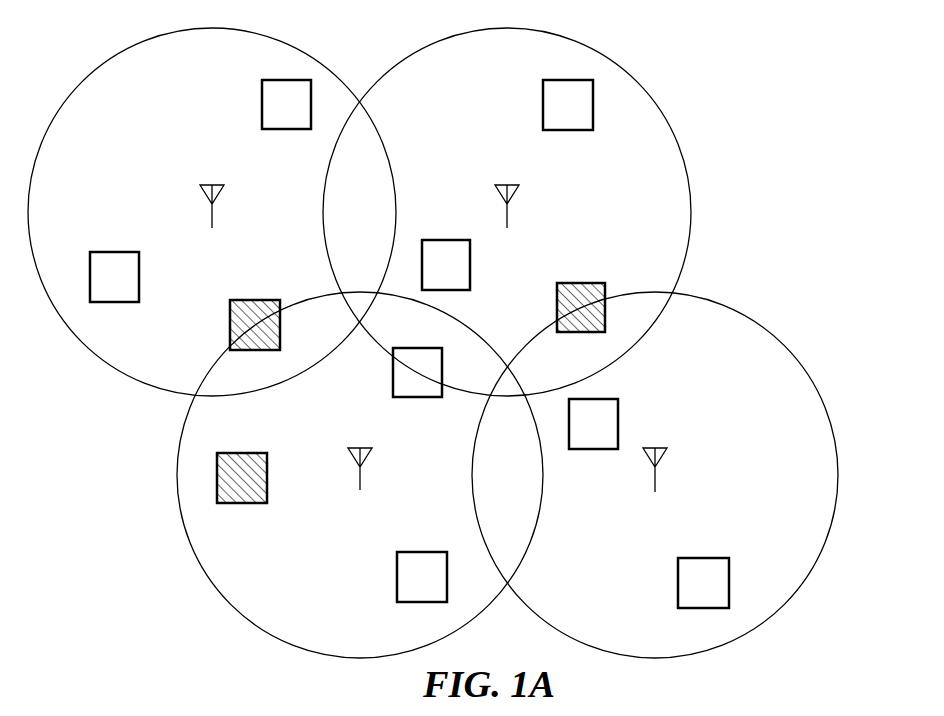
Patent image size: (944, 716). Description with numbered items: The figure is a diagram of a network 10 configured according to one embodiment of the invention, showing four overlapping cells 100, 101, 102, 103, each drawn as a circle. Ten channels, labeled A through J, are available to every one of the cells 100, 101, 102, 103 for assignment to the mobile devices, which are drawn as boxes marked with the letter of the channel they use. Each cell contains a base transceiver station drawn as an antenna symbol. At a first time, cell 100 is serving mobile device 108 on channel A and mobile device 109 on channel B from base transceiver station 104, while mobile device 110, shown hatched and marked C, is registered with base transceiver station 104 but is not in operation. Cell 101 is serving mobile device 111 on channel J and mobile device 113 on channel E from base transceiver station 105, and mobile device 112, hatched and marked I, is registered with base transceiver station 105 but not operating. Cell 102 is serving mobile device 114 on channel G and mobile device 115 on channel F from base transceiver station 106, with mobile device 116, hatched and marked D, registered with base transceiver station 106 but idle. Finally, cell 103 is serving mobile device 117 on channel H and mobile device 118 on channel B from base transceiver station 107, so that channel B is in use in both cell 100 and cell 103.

The network 10 is at (778, 156).
The cell 100 is at (99, 61).
The cell 101 is at (227, 609).
The cell 102 is at (597, 49).
The cell 103 is at (769, 621).
The base transceiver station 104 is at (208, 184).
The base transceiver station 105 is at (356, 447).
The base transceiver station 106 is at (503, 184).
The base transceiver station 107 is at (660, 447).
The mobile device 108 is at (113, 252).
The mobile device 109 is at (283, 130).
The mobile device 110 is at (253, 300).
The mobile device 111 is at (417, 398).
The mobile device 112 is at (236, 504).
The mobile device 113 is at (396, 575).
The mobile device 114 is at (437, 240).
The mobile device 115 is at (573, 131).
The mobile device 116 is at (584, 283).
The mobile device 117 is at (706, 558).
The mobile device 118 is at (591, 450).